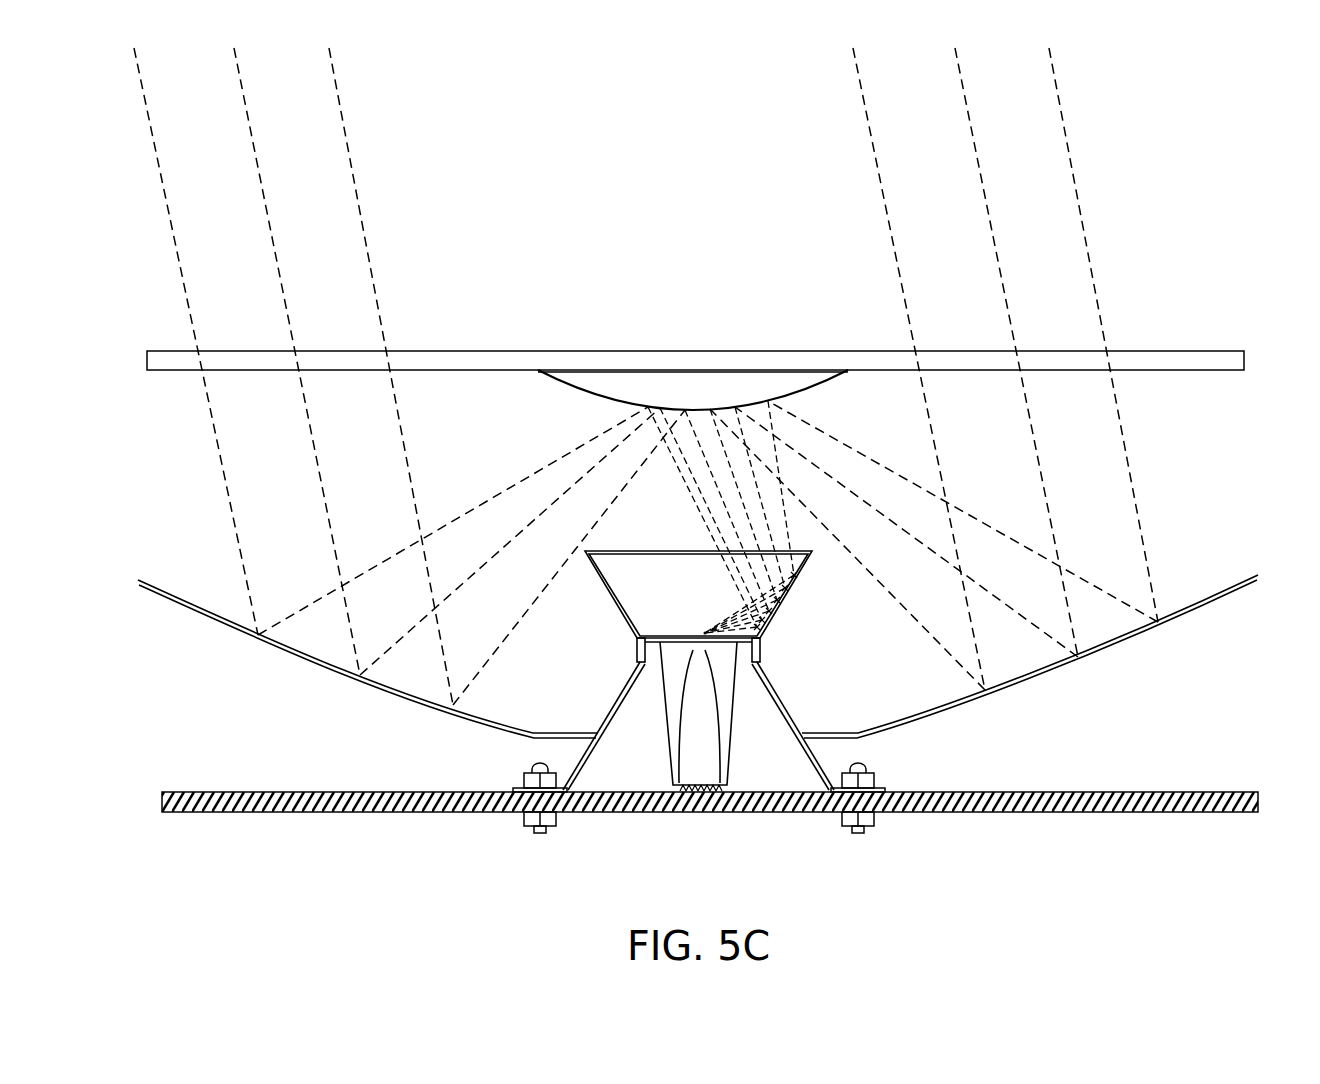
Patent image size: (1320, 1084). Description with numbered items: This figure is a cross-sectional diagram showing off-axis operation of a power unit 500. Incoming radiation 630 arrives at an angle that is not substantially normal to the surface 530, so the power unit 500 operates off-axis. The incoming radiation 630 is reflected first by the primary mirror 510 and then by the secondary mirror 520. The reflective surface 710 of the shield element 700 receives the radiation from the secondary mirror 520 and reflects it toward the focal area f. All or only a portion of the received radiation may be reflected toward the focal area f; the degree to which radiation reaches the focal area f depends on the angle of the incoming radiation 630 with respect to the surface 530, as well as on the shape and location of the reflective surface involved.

The power unit 500 is at (1226, 173).
The primary mirror 510 is at (1105, 646).
The secondary mirror 520 is at (808, 389).
The surface 530 is at (1185, 351).
The incoming radiation 630 is at (865, 239).
The shield element 700 is at (698, 596).
The reflective surface 710 is at (623, 608).
The focal area f is at (702, 630).